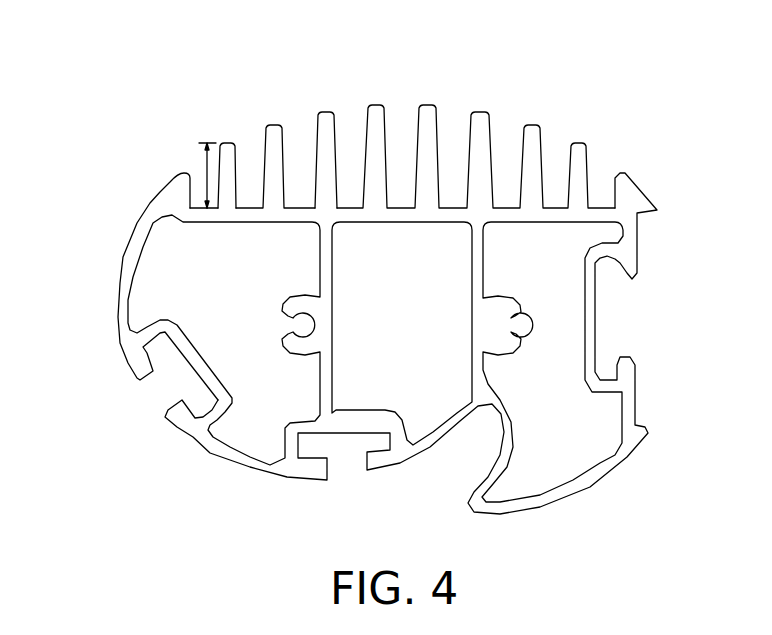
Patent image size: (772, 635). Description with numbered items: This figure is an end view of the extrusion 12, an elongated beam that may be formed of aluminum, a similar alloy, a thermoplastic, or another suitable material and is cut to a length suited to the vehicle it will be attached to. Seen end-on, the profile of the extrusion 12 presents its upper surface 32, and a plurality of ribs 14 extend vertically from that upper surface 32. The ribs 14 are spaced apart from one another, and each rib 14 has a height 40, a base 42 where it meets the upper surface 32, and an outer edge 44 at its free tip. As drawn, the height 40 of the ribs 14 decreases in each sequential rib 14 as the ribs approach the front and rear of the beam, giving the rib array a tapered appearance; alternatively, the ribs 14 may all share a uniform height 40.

The extrusion 12 is at (112, 332).
The ribs 14 is at (577, 168).
The upper surface 32 is at (237, 210).
The height 40 is at (203, 165).
The base 42 is at (274, 203).
The outer edge 44 is at (324, 113).